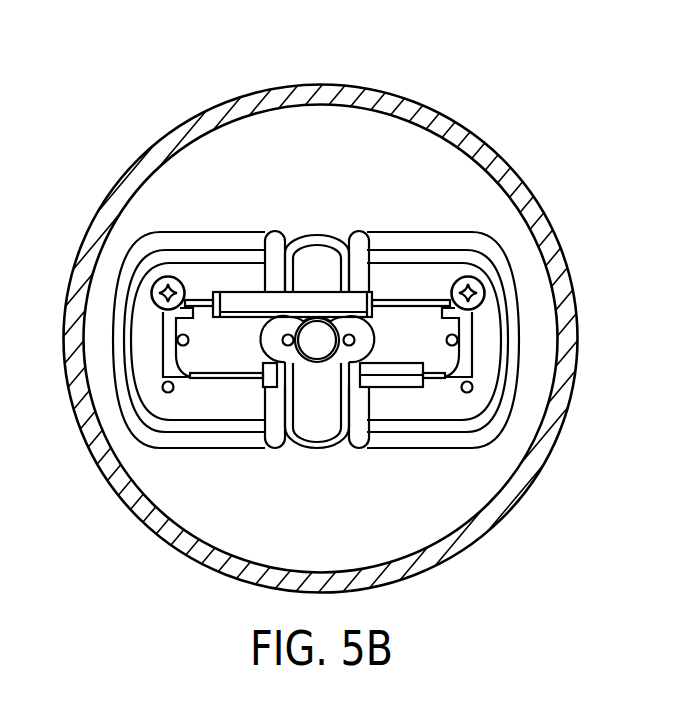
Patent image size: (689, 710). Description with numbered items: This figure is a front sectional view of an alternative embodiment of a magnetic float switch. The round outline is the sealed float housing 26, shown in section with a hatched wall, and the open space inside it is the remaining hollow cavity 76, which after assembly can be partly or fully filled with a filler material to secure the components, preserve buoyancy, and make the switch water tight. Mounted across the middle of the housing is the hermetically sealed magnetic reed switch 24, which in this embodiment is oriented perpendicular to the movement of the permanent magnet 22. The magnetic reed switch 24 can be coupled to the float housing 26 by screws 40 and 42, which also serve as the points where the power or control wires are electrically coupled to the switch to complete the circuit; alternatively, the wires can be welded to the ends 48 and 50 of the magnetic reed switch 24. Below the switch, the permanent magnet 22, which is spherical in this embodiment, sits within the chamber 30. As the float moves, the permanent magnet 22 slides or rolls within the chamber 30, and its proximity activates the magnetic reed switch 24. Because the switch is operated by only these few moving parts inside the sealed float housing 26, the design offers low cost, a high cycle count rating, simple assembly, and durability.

The permanent magnet 22 is at (317, 353).
The magnetic reed switch 24 is at (303, 298).
The float housing 26 is at (492, 150).
The chamber 30 is at (334, 375).
The screw 40 is at (152, 284).
The screw 42 is at (485, 283).
The end of the magnetic reed switch 48 is at (205, 300).
The end of the magnetic reed switch 50 is at (389, 305).
The hollow cavity 76 is at (275, 157).